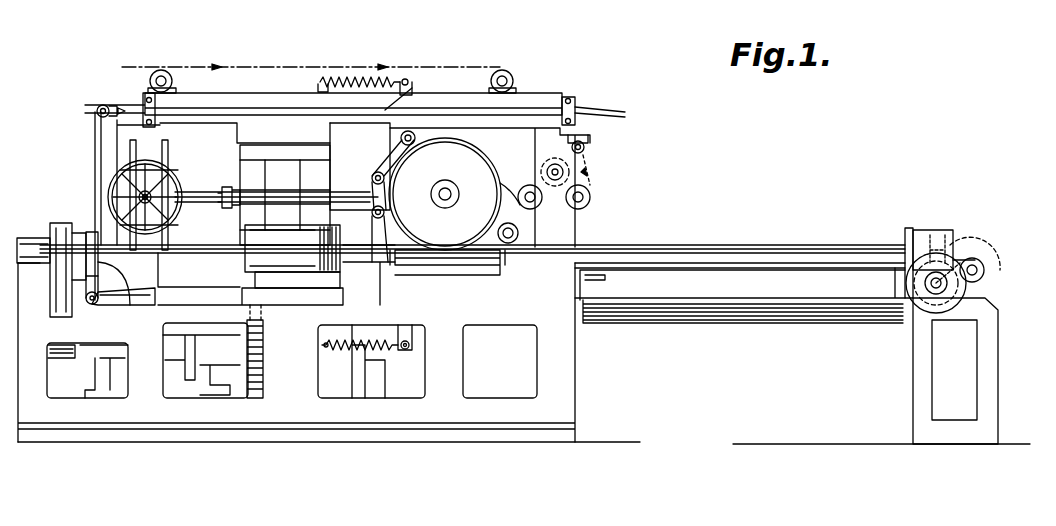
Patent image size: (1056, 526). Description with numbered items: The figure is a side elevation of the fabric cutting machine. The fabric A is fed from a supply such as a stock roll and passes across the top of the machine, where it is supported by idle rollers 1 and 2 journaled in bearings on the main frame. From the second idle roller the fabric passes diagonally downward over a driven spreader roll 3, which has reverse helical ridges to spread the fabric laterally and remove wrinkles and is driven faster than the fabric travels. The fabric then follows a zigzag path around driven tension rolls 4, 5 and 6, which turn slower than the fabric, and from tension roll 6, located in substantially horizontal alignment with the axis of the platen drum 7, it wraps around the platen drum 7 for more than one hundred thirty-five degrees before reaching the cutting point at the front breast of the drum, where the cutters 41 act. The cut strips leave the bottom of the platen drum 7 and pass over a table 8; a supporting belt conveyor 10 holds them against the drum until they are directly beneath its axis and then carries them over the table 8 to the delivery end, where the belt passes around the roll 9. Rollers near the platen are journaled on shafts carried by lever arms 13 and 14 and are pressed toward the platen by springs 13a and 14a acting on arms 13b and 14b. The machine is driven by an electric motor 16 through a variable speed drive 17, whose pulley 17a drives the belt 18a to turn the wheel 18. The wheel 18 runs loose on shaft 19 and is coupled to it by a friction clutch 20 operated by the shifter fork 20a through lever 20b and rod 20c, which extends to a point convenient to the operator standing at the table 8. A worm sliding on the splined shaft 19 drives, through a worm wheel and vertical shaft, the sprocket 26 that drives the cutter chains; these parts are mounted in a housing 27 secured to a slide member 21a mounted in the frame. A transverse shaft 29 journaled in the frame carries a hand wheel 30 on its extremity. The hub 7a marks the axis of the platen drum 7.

The fabric A is at (243, 64).
The idle roller 1 is at (150, 80).
The idle roller 2 is at (491, 80).
The spreader roll 3 is at (585, 146).
The tension roll 4 is at (585, 204).
The tension roll 5 is at (542, 165).
The tension roll 6 is at (520, 208).
The platen drum 7 is at (437, 140).
The drum hub 7a is at (449, 188).
The table 8 is at (800, 262).
The roll 9 is at (940, 258).
The supporting belt conveyor 10 is at (375, 280).
The lever arm 13 is at (386, 214).
The spring 13a is at (385, 355).
The arm 13b is at (412, 328).
The lever arm 14 is at (380, 165).
The spring 14a is at (372, 78).
The arm 14b is at (410, 88).
The motor 16 is at (371, 361).
The variable speed drive 17 is at (200, 345).
The pulley 17a is at (85, 360).
The wheel 18 is at (50, 235).
The belt 18a is at (58, 310).
The shaft 19 is at (222, 254).
The clutch 20 is at (88, 232).
The shifter fork 20a is at (130, 305).
The lever 20b is at (96, 167).
The rod 20c is at (605, 104).
The slide member 21a is at (338, 158).
The sprocket 26 is at (245, 180).
The housing 27 is at (245, 272).
The shaft 29 is at (150, 170).
The hand wheel 30 is at (178, 190).
The cutter 41 is at (220, 200).